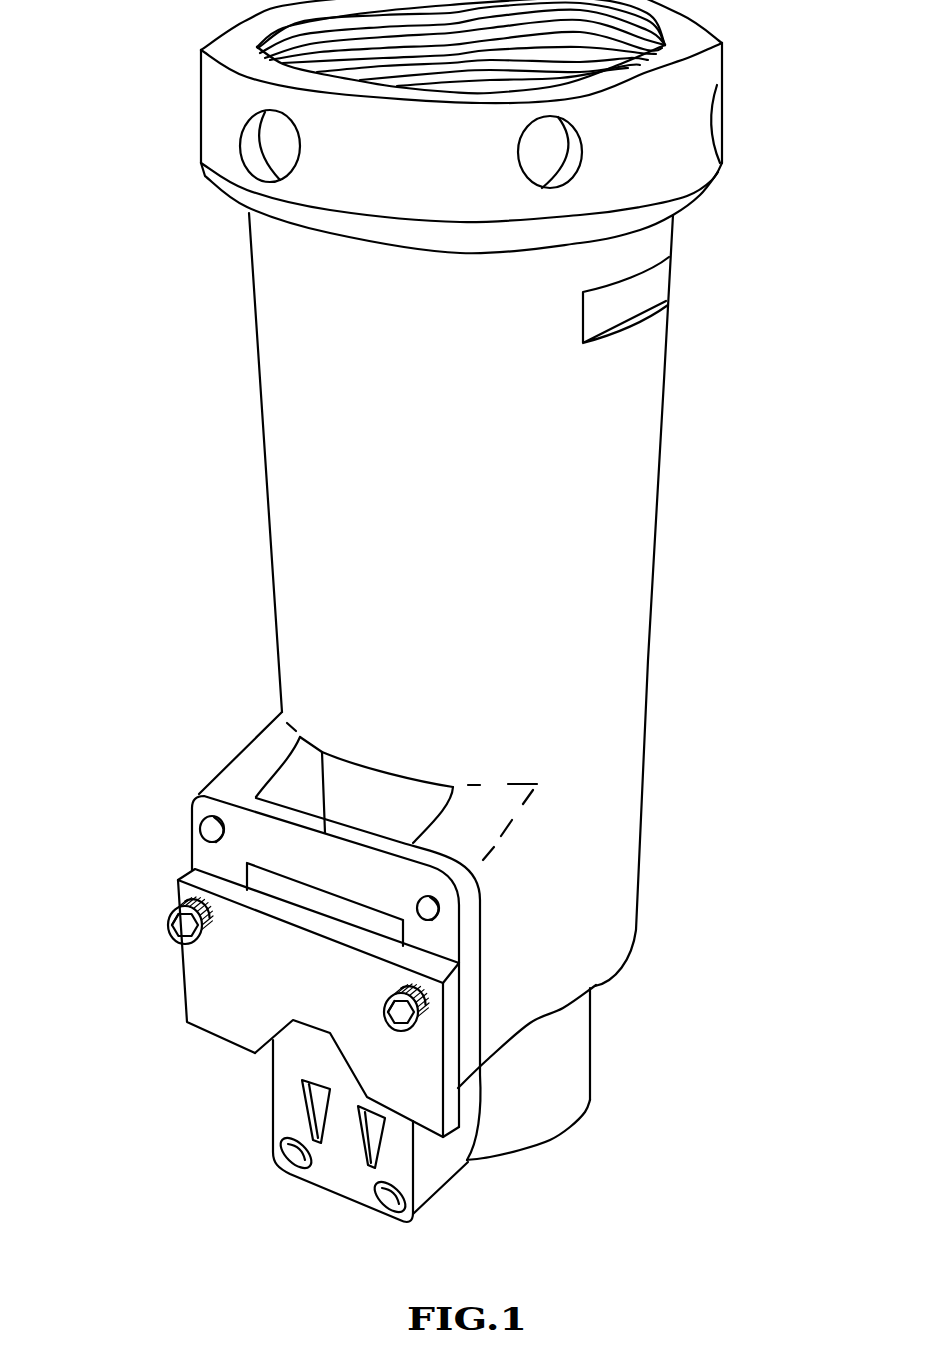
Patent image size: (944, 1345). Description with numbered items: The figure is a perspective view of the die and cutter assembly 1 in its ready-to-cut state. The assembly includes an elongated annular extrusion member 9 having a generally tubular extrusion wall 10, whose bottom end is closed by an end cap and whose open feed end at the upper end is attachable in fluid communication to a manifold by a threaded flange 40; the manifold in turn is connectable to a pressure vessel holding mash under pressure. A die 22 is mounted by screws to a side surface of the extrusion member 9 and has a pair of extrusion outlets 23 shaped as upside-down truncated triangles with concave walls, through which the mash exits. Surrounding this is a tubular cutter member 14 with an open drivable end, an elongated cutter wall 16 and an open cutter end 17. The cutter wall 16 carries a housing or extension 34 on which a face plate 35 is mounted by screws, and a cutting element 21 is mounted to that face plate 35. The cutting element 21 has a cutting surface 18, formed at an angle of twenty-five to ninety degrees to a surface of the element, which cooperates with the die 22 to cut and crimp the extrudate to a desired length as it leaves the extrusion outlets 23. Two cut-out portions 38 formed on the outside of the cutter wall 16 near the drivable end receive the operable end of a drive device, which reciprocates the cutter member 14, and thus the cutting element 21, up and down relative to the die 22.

The die and cutter assembly 1 is at (447, 619).
The annular extrusion member 9 is at (582, 1063).
The extrusion wall 10 is at (537, 1127).
The tubular cutter member 14 is at (248, 619).
The cutter wall 16 is at (614, 691).
The open cutter end 17 is at (595, 985).
The cutting surface 18 is at (303, 1040).
The cutting element 21 is at (204, 982).
The die 22 is at (437, 1170).
The extrusion outlets 23 is at (318, 1105).
The extension 34 is at (249, 770).
The face plate 35 is at (468, 930).
The cut-out portions 38 is at (648, 283).
The threaded flange 40 is at (690, 152).